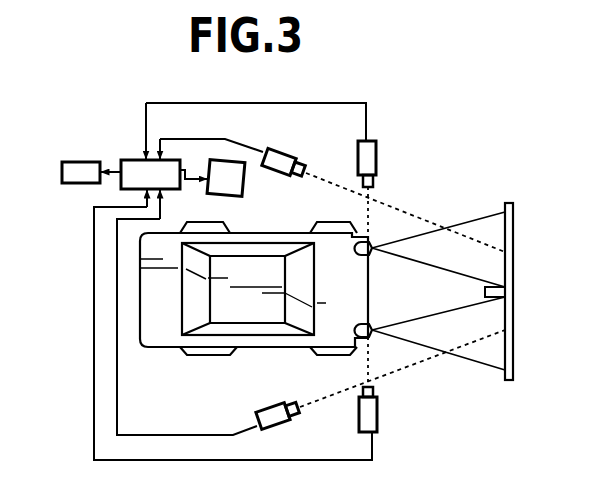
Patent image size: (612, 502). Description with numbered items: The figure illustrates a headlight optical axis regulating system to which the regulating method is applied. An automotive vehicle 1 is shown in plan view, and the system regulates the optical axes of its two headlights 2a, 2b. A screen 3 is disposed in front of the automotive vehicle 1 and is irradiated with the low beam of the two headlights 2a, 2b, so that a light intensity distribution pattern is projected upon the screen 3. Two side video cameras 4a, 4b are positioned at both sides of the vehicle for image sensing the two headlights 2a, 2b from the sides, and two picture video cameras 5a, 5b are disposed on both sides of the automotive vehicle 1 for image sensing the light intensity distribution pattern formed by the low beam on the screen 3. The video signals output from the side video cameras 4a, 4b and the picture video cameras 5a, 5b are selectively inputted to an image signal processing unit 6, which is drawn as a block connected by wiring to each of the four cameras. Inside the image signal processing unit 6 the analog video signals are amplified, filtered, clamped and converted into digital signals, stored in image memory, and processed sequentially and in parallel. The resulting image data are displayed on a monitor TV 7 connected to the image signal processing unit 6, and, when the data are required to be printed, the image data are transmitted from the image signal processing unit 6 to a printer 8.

The automotive vehicle 1 is at (158, 330).
The headlight 2a is at (374, 243).
The headlight 2b is at (373, 325).
The screen 3 is at (514, 217).
The side video camera 4a is at (376, 150).
The side video camera 4b is at (378, 413).
The picture video camera 5a is at (281, 149).
The picture video camera 5b is at (279, 405).
The image signal processing unit 6 is at (128, 160).
The monitor TV 7 is at (245, 182).
The printer 8 is at (66, 184).